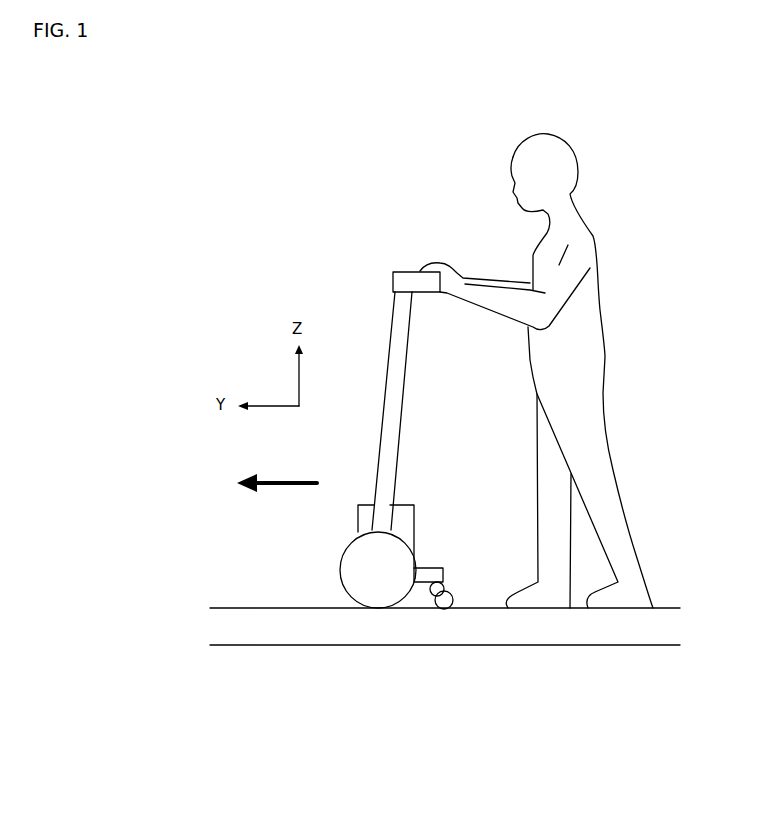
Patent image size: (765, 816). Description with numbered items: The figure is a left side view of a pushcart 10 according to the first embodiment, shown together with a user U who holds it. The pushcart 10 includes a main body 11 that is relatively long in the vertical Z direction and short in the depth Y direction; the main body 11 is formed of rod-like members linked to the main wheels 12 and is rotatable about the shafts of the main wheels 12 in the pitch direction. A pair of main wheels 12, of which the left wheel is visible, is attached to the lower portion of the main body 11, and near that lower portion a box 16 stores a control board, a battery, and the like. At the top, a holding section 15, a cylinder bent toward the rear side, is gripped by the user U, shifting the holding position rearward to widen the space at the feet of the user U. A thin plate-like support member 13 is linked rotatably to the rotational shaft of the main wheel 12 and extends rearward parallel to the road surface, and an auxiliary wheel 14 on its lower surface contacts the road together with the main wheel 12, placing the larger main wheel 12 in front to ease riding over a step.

The pushcart 10 is at (312, 224).
The main body 11 is at (398, 468).
The main wheels 12 is at (382, 590).
The support member 13 is at (425, 600).
The auxiliary wheel 14 is at (445, 606).
The holding section 15 is at (404, 271).
The box 16 is at (415, 507).
The user U is at (562, 155).